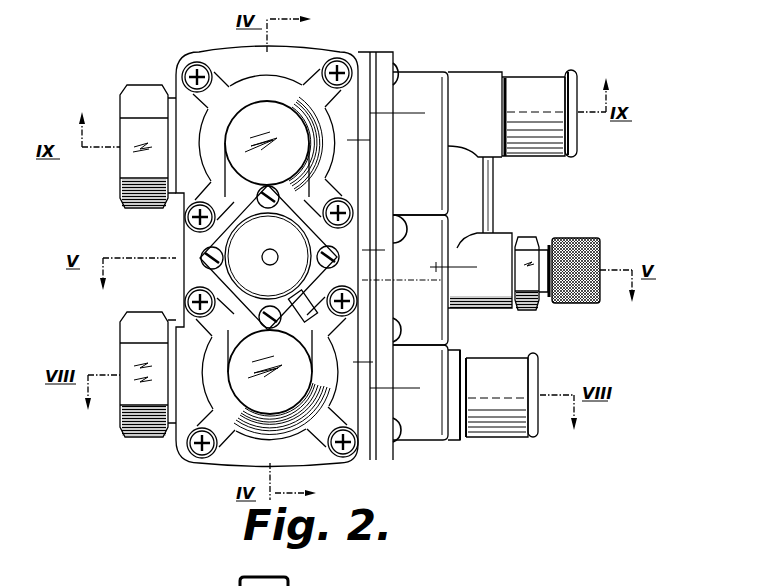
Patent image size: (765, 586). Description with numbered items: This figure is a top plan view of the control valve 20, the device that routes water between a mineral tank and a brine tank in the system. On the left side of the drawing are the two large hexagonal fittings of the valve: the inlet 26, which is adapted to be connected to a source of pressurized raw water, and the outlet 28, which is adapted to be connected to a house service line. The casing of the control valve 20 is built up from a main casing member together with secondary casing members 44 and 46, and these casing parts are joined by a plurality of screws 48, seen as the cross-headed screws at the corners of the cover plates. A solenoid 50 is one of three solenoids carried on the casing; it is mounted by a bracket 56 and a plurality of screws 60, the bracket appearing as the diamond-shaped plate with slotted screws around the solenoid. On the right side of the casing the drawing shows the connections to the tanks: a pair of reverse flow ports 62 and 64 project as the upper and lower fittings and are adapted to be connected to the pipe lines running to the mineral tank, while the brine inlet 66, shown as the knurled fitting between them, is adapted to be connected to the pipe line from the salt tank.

The control valve 20 is at (437, 451).
The inlet 26 is at (122, 410).
The outlet 28 is at (120, 178).
The secondary casing member 44 is at (274, 103).
The secondary casing member 46 is at (428, 107).
The screws 48 is at (352, 462).
The solenoid 50 is at (283, 291).
The bracket 56 is at (213, 240).
The screws 60 is at (201, 256).
The reverse flow port 62 is at (578, 136).
The reverse flow port 64 is at (537, 368).
The brine inlet 66 is at (600, 246).